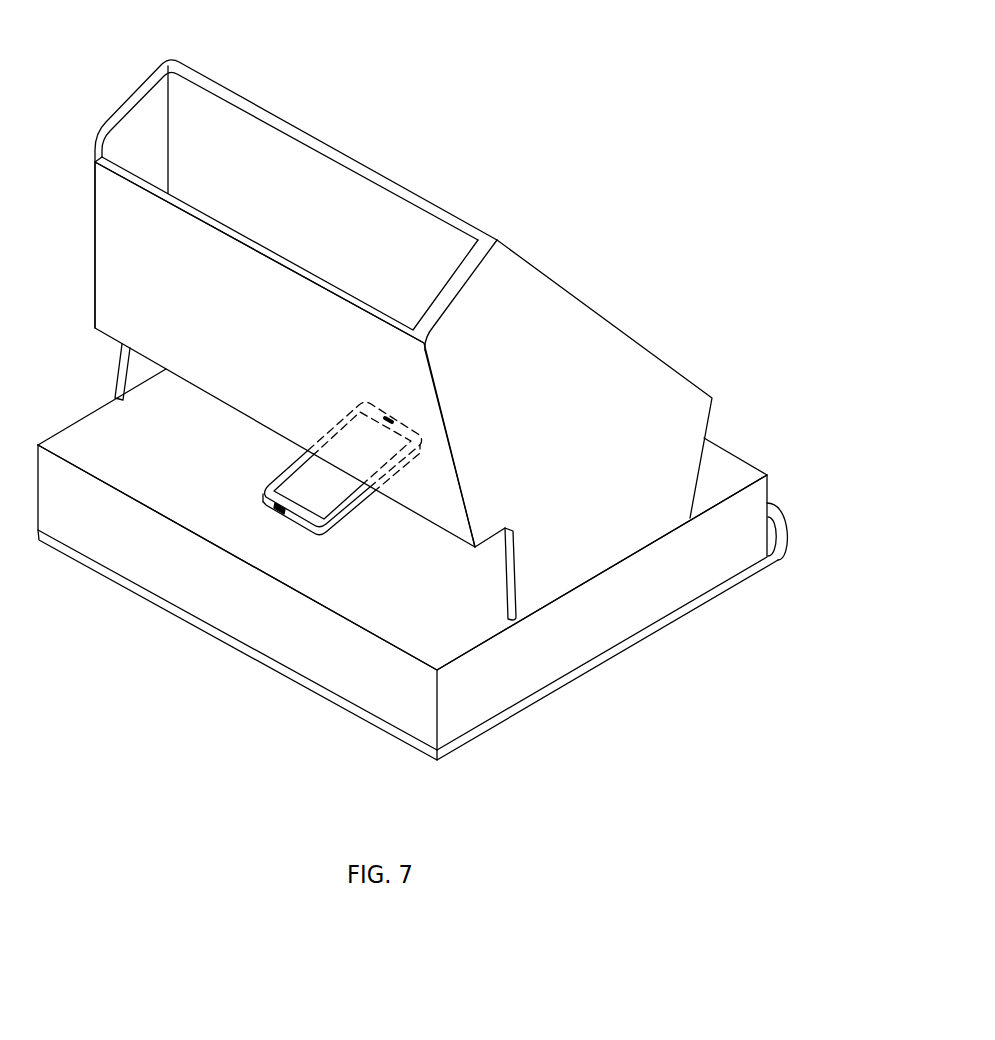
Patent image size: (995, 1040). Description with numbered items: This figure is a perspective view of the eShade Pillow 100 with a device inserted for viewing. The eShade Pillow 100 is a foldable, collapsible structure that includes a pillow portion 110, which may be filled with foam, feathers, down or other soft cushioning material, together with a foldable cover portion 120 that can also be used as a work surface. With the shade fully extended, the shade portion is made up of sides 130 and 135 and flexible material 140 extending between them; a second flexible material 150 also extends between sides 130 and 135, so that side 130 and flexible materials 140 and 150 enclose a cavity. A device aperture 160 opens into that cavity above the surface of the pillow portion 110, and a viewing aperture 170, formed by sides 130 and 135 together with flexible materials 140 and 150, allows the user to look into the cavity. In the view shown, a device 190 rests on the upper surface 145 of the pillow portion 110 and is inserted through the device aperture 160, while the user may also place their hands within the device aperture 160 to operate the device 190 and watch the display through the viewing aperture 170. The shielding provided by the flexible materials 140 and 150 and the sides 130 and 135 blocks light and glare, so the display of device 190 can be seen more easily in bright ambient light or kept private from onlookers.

The eShade Pillow 100 is at (626, 124).
The pillow portion 110 is at (732, 557).
The foldable cover portion 120 is at (510, 715).
The side 130 is at (130, 122).
The side 135 is at (597, 327).
The flexible material 140 is at (412, 267).
The base top surface 145 is at (182, 471).
The flexible material 150 is at (272, 352).
The device aperture 160 is at (470, 568).
The viewing aperture 170 is at (293, 180).
The device 190 is at (332, 497).